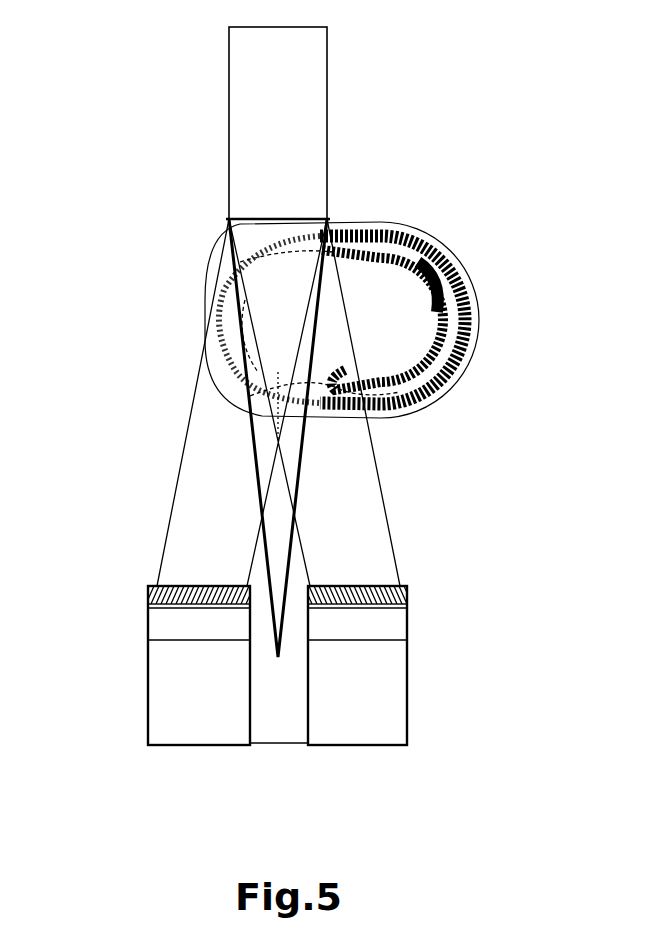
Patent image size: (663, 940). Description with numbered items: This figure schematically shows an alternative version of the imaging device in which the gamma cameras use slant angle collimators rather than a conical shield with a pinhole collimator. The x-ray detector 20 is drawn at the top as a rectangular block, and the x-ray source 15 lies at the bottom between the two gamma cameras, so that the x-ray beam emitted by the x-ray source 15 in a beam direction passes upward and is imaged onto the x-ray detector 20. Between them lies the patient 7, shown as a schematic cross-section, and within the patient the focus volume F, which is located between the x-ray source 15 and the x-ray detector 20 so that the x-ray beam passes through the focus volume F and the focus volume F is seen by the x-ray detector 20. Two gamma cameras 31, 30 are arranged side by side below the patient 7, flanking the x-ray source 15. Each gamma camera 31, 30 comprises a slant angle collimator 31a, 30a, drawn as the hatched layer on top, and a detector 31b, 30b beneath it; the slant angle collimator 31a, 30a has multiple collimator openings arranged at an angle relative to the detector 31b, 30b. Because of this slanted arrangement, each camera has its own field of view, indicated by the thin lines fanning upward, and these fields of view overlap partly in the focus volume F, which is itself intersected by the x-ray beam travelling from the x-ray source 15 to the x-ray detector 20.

The x-ray detector 20 is at (303, 99).
The patient 7 is at (455, 325).
The focus volume F is at (275, 289).
The x-ray source 15 is at (281, 715).
The gamma camera 31 is at (150, 585).
The slant angle collimator 31a is at (162, 587).
The detector 31b is at (160, 629).
The gamma camera 30 is at (434, 622).
The slant angle collimator 30a is at (363, 587).
The detector 30b is at (382, 628).